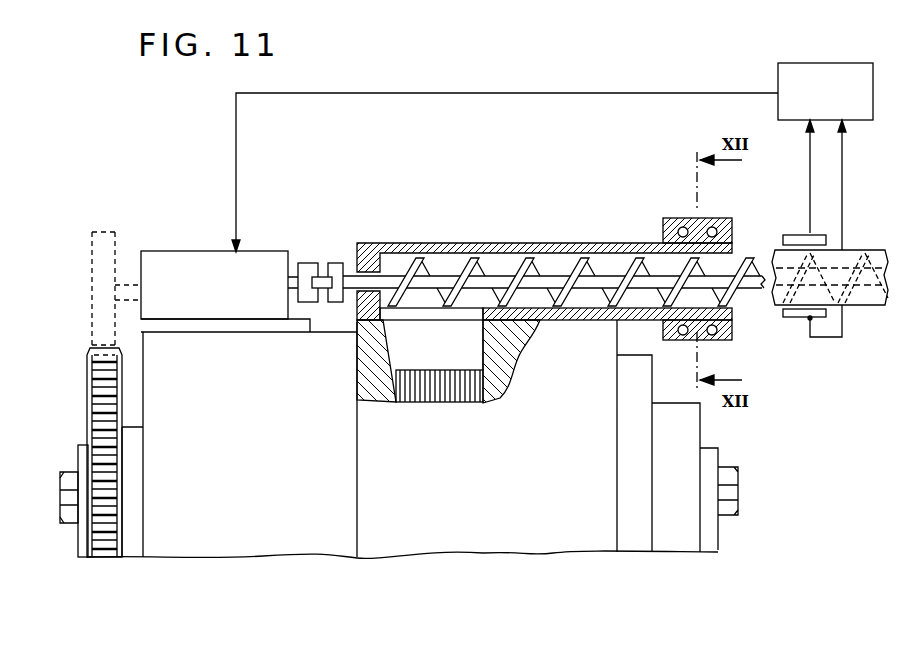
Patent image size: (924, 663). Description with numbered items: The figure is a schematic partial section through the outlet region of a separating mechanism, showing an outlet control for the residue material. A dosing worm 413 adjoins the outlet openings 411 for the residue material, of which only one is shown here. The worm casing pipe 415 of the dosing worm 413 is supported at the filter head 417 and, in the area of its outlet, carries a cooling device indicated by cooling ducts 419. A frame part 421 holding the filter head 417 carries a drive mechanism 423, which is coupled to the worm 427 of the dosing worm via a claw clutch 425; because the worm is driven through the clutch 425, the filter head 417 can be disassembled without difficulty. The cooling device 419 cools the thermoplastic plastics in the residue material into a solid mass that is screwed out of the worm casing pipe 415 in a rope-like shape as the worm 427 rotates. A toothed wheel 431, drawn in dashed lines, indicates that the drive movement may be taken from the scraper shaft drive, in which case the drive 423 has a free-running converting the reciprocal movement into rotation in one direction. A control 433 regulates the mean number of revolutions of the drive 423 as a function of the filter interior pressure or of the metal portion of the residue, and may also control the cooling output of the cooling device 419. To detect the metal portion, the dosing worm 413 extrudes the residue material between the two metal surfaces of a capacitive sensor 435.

The outlet openings 411 is at (431, 332).
The dosing worm 413 is at (552, 244).
The worm casing pipe 415 is at (613, 243).
The filter head 417 is at (553, 523).
The cooling ducts 419 is at (710, 227).
The frame part 421 is at (265, 528).
The drive mechanism 423 is at (197, 266).
The claw clutch 425 is at (318, 263).
The worm 427 is at (512, 268).
The toothed wheel 431 is at (101, 247).
The control 433 is at (845, 76).
The capacitive sensor 435 is at (795, 233).